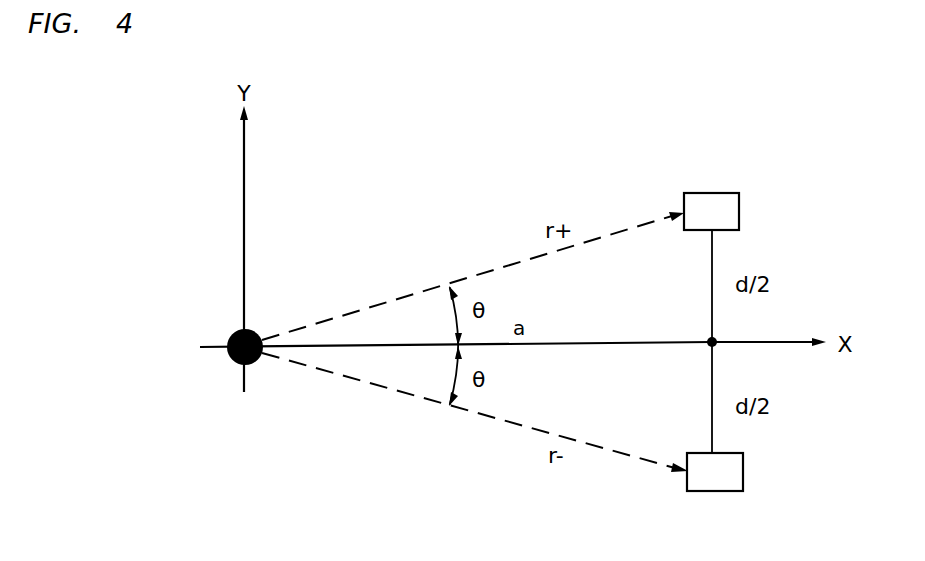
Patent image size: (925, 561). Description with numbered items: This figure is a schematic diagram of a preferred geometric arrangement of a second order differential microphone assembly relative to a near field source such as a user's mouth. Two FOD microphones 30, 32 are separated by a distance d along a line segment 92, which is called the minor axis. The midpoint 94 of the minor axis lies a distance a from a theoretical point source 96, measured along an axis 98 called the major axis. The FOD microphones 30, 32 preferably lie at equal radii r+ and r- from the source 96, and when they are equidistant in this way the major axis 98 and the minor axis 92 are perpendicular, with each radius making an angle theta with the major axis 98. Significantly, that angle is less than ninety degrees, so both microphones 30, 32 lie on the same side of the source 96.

The FOD microphone 30 is at (740, 206).
The FOD microphone 32 is at (743, 468).
The line segment (minor axis) 92 is at (712, 270).
The midpoint of the minor axis 94 is at (712, 344).
The theoretical point source 96 is at (258, 333).
The axis (major axis) 98 is at (578, 344).